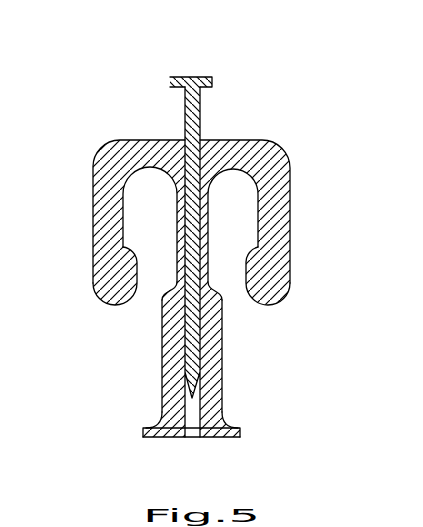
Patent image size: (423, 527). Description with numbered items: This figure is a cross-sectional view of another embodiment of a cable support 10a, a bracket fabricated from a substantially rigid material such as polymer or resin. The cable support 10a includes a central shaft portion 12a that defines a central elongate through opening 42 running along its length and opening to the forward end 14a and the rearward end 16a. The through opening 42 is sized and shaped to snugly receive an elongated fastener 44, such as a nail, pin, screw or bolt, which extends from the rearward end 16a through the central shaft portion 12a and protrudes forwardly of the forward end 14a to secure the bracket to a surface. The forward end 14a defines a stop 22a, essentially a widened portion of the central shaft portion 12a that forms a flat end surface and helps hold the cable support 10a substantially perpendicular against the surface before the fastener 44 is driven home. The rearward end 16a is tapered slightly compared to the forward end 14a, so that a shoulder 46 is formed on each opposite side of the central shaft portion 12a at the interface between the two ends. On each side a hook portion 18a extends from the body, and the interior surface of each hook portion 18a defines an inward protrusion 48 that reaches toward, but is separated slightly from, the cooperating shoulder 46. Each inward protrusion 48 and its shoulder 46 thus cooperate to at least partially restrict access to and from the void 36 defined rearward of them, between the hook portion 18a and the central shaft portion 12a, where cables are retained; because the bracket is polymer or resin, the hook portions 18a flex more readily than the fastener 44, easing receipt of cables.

The cable support 10a is at (128, 93).
The central shaft portion 12a is at (248, 356).
The forward end 14a is at (246, 417).
The rearward end 16a is at (222, 210).
The hook portion 18a is at (93, 180).
The stop 22a is at (143, 430).
The void 36 is at (150, 190).
The through opening 42 is at (222, 392).
The fastener 44 is at (184, 103).
The shoulder 46 is at (162, 297).
The inward protrusion 48 is at (95, 246).